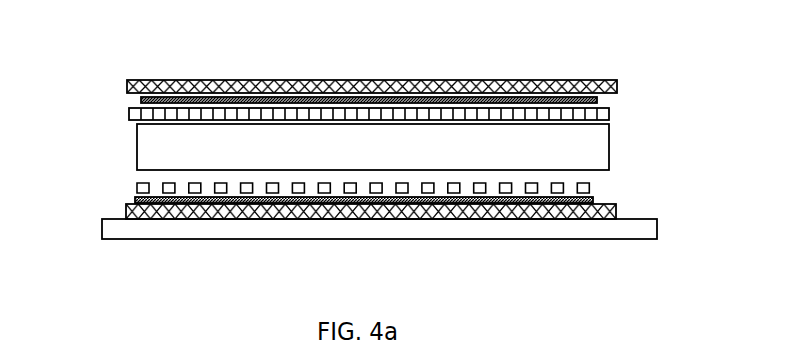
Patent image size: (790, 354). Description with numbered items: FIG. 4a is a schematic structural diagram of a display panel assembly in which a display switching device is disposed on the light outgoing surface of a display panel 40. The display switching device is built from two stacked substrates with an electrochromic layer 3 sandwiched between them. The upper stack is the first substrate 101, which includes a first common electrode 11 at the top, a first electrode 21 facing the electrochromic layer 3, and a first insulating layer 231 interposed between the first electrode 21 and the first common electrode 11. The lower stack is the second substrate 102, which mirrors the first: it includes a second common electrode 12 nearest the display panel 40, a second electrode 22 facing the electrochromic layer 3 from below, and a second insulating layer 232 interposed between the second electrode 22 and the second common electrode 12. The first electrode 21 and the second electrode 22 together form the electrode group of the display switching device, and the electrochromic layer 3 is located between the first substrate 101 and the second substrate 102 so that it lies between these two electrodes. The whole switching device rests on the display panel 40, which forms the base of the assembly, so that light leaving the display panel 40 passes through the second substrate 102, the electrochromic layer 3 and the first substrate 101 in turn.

The first substrate 101 is at (372, 77).
The second substrate 102 is at (401, 237).
The first common electrode 11 is at (400, 80).
The second common electrode 12 is at (412, 210).
The first electrode 21 is at (128, 112).
The second electrode 22 is at (505, 188).
The first insulating layer 231 is at (142, 101).
The second insulating layer 232 is at (455, 201).
The electrochromic layer 3 is at (157, 151).
The display panel 40 is at (168, 228).